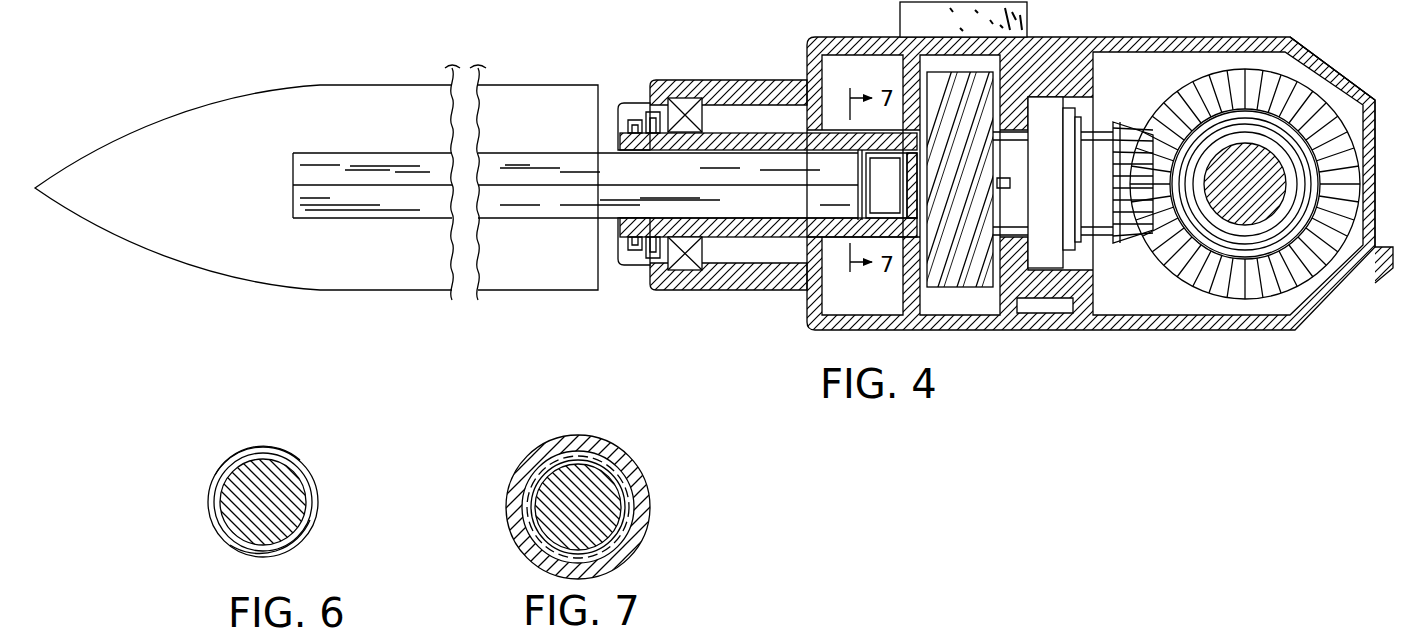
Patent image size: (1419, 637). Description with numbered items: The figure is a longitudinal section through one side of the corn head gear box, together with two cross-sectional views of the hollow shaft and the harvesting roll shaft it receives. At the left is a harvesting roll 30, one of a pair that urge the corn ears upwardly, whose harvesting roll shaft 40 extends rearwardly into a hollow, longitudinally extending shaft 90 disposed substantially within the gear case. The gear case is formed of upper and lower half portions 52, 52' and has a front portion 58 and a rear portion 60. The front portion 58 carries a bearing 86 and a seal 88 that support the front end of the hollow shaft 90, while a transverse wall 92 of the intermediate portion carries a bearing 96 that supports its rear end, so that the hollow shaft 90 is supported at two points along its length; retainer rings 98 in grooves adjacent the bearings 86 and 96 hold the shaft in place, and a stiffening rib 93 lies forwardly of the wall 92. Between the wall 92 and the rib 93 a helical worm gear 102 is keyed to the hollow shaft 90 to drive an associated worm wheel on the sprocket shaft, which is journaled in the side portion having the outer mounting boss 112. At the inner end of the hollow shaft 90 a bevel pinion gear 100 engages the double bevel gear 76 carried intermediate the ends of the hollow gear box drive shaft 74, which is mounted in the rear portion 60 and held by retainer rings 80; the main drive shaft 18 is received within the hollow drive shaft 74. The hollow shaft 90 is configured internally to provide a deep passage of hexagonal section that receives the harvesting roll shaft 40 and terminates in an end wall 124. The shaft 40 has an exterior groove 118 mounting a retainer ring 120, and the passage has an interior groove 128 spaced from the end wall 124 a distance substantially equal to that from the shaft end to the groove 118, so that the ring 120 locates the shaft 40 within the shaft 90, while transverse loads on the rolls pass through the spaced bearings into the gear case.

In FIG. 4, the main drive shaft 18 is at (1302, 103).
In FIG. 4, the harvesting roll 30 is at (305, 292).
In FIG. 4, the harvesting roll shaft 40 is at (522, 152).
In FIG. 6, the harvesting roll shaft 40 is at (298, 520).
In FIG. 4, the gear case lower half portion 52 is at (1091, 202).
In FIG. 4, the gear case upper half portion 52' is at (1337, 54).
In FIG. 4, the front portion 58 is at (655, 118).
In FIG. 4, the rear portion 60 is at (1390, 252).
In FIG. 4, the gear box drive shaft 74 is at (1232, 125).
In FIG. 4, the double bevel gear 76 is at (1197, 297).
In FIG. 4, the retainer ring 80 is at (1277, 233).
In FIG. 4, the bearing 86 is at (686, 266).
In FIG. 4, the seal 88 is at (638, 253).
In FIG. 4, the hollow longitudinally extending shaft 90 is at (744, 133).
In FIG. 7, the hollow longitudinally extending shaft 90 is at (640, 533).
In FIG. 4, the transverse wall 92 is at (1083, 118).
In FIG. 4, the stiffening rib 93 is at (897, 292).
In FIG. 4, the bearing 96 is at (1043, 107).
In FIG. 4, the retainer ring 98 is at (638, 102).
In FIG. 4, the bevel pinion gear 100 is at (1135, 108).
In FIG. 4, the helical worm gear 102 is at (963, 290).
In FIG. 4, the outer mounting boss 112 is at (900, 27).
In FIG. 6, the exterior groove 118 is at (230, 470).
In FIG. 4, the retainer ring 120 is at (858, 160).
In FIG. 6, the retainer ring 120 is at (311, 473).
In FIG. 7, the retainer ring 120 is at (628, 482).
In FIG. 4, the end wall 124 is at (885, 193).
In FIG. 7, the interior groove 128 is at (532, 472).